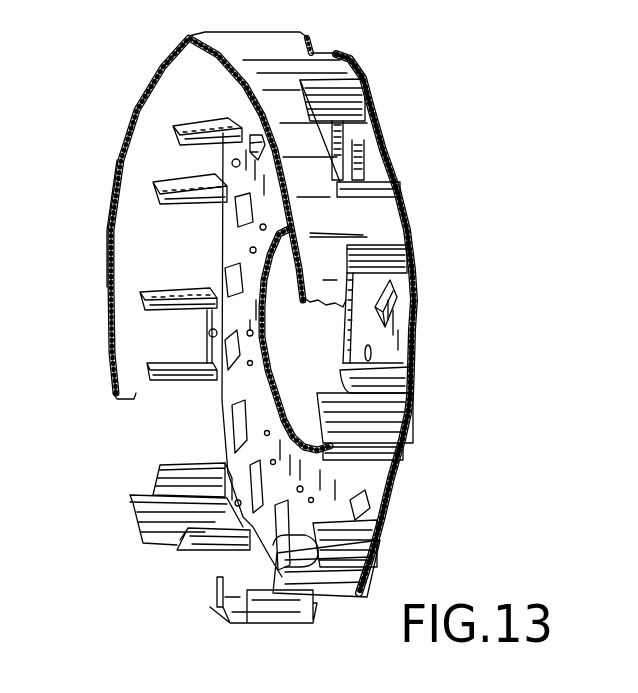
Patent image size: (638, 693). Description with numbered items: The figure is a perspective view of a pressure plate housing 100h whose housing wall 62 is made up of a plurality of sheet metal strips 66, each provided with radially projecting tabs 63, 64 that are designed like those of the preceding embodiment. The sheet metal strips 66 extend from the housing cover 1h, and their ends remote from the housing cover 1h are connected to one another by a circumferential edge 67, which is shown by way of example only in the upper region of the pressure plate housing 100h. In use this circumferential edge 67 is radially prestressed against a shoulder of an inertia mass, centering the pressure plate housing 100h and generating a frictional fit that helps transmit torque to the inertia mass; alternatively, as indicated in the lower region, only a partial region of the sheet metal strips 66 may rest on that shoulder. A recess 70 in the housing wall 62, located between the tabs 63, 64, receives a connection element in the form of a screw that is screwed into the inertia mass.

The housing wall 62 is at (338, 47).
The circumferential edge 67 is at (170, 80).
The recess 70 is at (233, 147).
The tab 64 is at (175, 124).
The sheet metal strip 66 is at (200, 152).
The tab 63 is at (180, 380).
The housing cover 1h is at (383, 487).
The pressure plate housing 100h is at (453, 167).